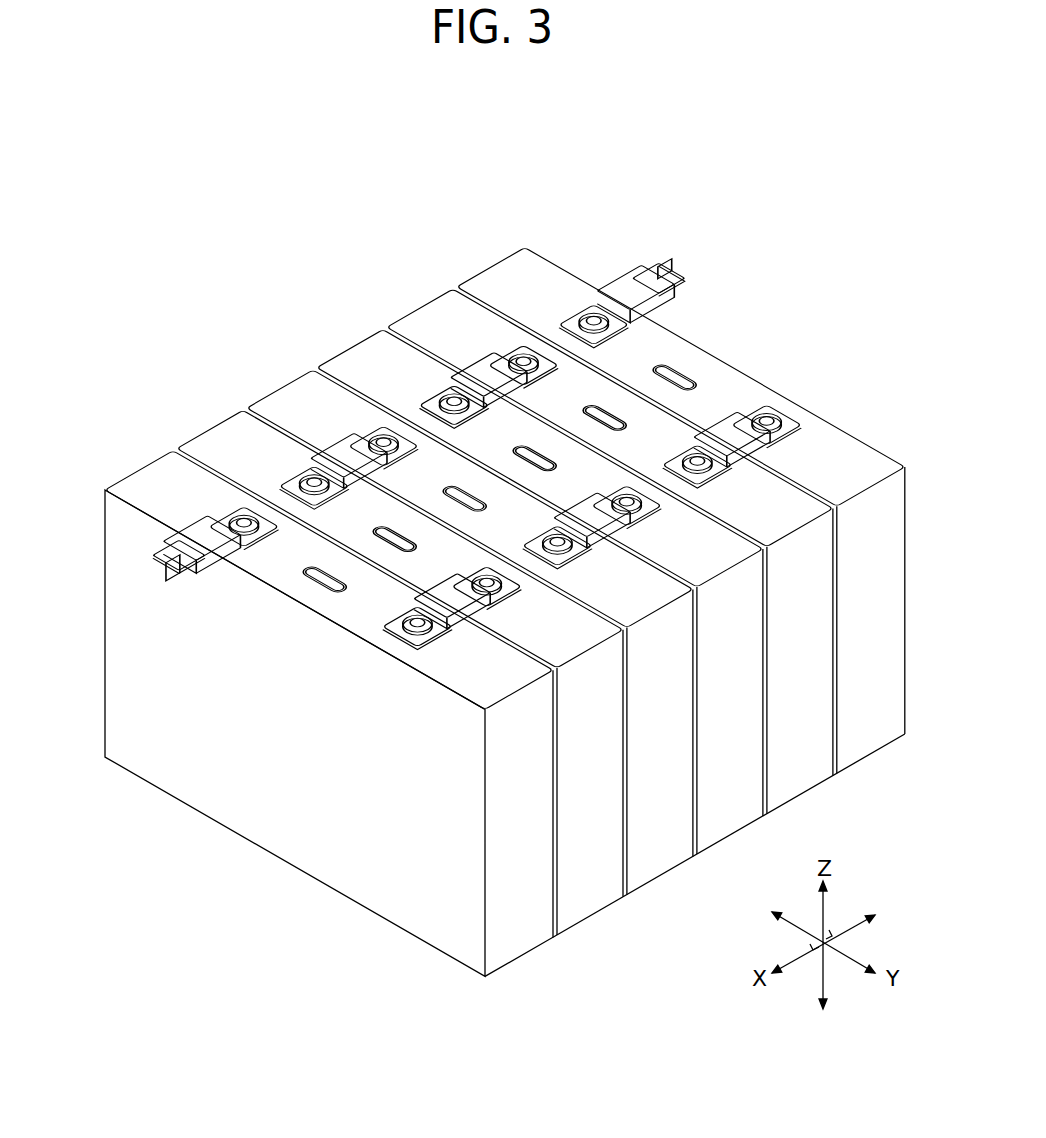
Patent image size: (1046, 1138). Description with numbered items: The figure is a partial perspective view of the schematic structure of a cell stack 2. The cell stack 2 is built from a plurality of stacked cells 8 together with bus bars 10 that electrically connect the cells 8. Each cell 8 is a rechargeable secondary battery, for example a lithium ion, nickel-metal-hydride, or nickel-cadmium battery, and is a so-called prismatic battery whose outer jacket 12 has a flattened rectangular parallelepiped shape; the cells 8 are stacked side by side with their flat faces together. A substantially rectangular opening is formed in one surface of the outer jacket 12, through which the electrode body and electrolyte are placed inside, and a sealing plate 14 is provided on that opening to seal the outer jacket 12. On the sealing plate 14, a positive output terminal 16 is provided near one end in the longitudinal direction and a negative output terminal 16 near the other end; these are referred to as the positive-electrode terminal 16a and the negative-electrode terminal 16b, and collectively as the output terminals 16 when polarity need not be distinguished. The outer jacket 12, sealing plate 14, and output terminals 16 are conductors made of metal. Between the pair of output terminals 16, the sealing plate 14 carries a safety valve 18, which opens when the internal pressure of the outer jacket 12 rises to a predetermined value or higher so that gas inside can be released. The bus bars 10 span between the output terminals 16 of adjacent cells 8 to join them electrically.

The cell stack 2 is at (498, 653).
The cell 8 is at (312, 847).
The bus bar 10 is at (622, 262).
The outer jacket 12 is at (523, 943).
The sealing plate 14 is at (157, 483).
The output terminal 16 is at (466, 661).
The positive-electrode terminal 16a is at (245, 513).
The negative-electrode terminal 16b is at (408, 640).
The safety valve 18 is at (307, 583).